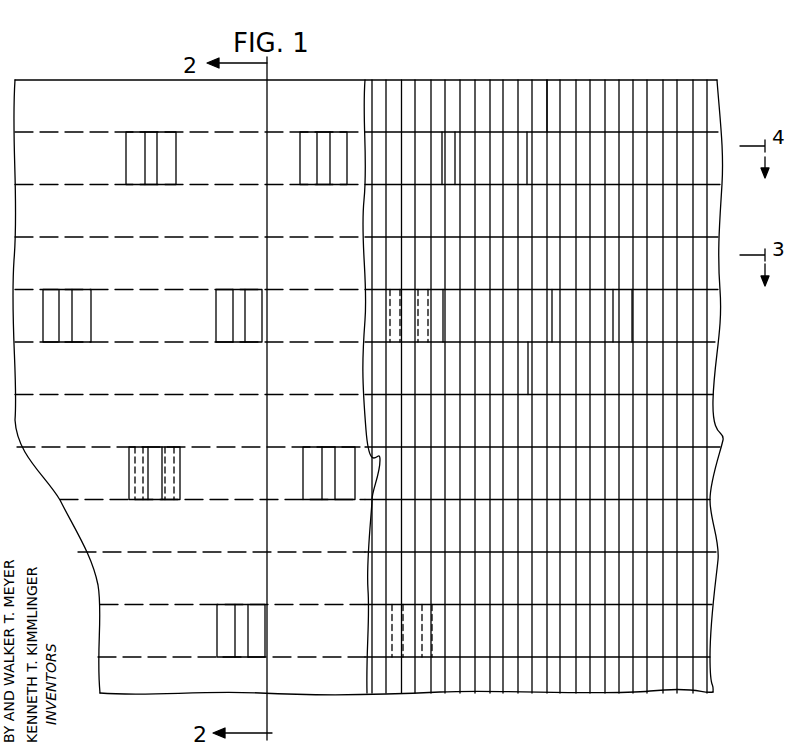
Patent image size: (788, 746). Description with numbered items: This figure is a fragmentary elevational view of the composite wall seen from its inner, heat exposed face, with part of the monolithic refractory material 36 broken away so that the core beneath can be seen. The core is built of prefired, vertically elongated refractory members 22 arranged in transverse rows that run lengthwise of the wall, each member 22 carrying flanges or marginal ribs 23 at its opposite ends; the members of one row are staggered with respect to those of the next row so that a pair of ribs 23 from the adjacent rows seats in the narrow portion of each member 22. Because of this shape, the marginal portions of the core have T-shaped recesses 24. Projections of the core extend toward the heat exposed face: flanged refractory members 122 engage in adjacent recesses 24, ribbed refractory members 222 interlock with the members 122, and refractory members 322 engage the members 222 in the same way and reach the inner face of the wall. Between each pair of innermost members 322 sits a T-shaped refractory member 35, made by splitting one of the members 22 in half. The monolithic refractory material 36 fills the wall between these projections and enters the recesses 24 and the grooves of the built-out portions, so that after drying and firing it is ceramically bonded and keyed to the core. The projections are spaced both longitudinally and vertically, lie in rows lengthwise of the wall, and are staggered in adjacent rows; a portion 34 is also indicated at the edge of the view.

The refractory members 22 is at (562, 138).
The flanges or marginal ribs 23 is at (130, 480).
The T-shaped recesses 24 is at (582, 135).
The edge portion 34 is at (749, 386).
The T-shaped refractory member 35 is at (153, 138).
The monolithic refractory material 36 is at (135, 650).
The ribbed or flanged refractory members 122 is at (442, 132).
The ribbed refractory members 222 is at (455, 137).
The refractory members 322 is at (127, 171).